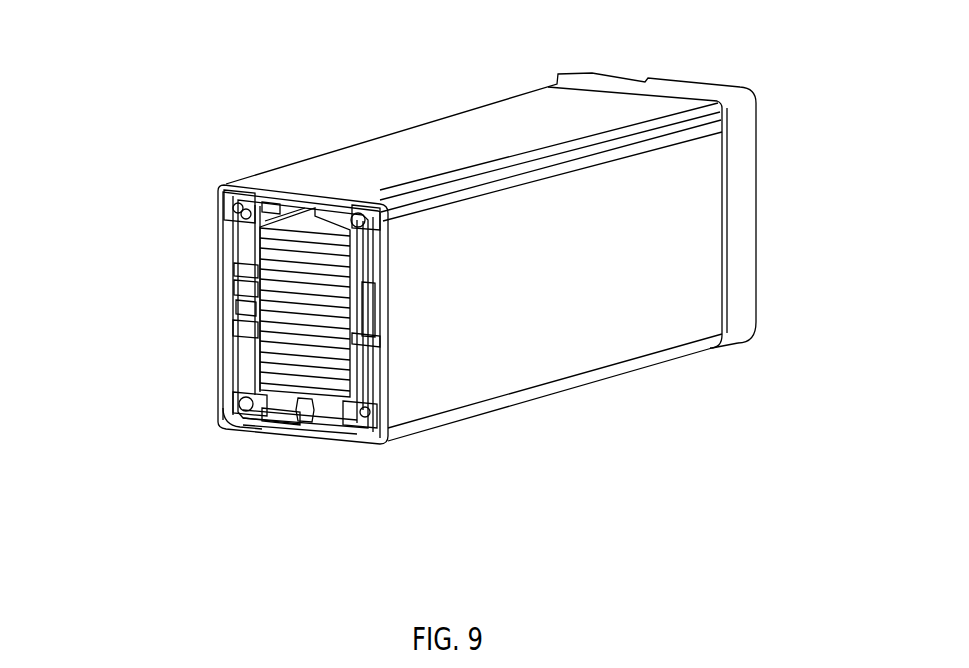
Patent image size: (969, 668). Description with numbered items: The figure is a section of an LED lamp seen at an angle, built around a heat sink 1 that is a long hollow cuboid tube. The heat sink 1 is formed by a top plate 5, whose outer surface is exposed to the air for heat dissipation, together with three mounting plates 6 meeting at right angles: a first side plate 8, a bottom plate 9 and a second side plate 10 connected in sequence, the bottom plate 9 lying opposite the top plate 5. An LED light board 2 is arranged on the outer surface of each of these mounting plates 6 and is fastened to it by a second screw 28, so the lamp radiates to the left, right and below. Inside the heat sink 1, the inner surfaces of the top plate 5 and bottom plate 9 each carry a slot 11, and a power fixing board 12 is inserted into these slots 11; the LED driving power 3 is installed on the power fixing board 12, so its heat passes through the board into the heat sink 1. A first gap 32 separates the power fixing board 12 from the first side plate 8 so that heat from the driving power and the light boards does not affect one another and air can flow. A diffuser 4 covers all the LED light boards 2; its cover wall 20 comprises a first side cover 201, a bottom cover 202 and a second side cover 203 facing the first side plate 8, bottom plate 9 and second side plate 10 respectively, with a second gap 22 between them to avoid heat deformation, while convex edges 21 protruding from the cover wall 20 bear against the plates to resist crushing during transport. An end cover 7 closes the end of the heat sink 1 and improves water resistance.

The heat sink 1 is at (363, 170).
The LED light board 2 is at (240, 302).
The LED driving power 3 is at (282, 323).
The diffuser 4 is at (620, 350).
The top plate 5 is at (467, 140).
The mounting plate 6 is at (238, 262).
The end cover 7 is at (743, 162).
The first side plate 8 is at (400, 297).
The bottom plate 9 is at (252, 430).
The second side plate 10 is at (225, 218).
The slot 11 is at (252, 185).
The power fixing board 12 is at (277, 205).
The cover wall 20 is at (403, 418).
The convex edge 21 is at (380, 443).
The second gap 22 is at (293, 430).
The second screw 28 is at (308, 437).
The first gap 32 is at (238, 287).
The first side cover 201 is at (728, 348).
The bottom cover 202 is at (297, 430).
The second side cover 203 is at (238, 308).